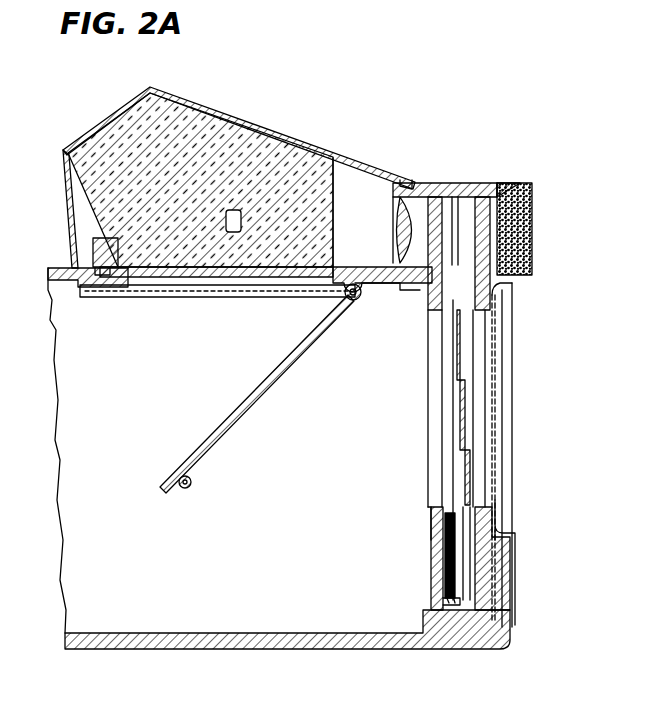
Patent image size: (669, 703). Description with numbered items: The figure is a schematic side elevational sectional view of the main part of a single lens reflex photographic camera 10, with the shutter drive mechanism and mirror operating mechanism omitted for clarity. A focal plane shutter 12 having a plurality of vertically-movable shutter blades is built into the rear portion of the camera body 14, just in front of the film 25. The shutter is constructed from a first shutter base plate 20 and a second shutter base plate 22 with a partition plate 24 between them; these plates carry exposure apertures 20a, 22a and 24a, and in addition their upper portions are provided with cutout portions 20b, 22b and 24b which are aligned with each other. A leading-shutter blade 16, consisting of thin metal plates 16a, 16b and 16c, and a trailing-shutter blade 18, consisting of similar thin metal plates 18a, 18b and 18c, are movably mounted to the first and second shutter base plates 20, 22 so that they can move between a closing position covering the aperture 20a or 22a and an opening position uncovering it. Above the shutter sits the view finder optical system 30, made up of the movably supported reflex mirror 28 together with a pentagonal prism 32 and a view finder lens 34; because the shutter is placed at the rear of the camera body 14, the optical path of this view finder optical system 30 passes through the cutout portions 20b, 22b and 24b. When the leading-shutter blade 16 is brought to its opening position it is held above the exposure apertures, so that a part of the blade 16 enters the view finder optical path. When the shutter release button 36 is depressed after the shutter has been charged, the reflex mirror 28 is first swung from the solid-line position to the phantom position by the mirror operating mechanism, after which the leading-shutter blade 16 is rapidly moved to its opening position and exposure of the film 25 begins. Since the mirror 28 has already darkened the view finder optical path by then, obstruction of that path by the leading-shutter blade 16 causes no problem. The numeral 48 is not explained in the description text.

The photographic camera 10 is at (276, 97).
The focal plane shutter 12 is at (436, 577).
The camera body 14 is at (165, 632).
The leading-shutter blade 16 is at (468, 394).
The thin metal plate 16a is at (461, 340).
The thin metal plate 16b is at (462, 408).
The thin metal plate 16c is at (464, 470).
The trailing-shutter blade 18 is at (450, 510).
The thin metal plate 18a is at (447, 596).
The thin metal plate 18b is at (450, 600).
The thin metal plate 18c is at (455, 600).
The first shutter base plate 20 is at (494, 570).
The exposure aperture 20a is at (493, 500).
The cutout portion 20b is at (484, 200).
The second shutter base plate 22 is at (436, 548).
The exposure aperture 22a is at (432, 506).
The cutout portion 22b is at (437, 205).
The partition plate 24 is at (482, 586).
The exposure aperture 24a is at (454, 318).
The cutout portion 24b is at (457, 205).
The film 25 is at (491, 356).
The reflex mirror 28 is at (172, 300).
The view finder optical system 30 is at (336, 190).
The pentagonal prism 32 is at (287, 252).
The view finder lens 34 is at (396, 230).
The shutter release button 36 is at (226, 214).
The pivot arm 48 is at (218, 440).